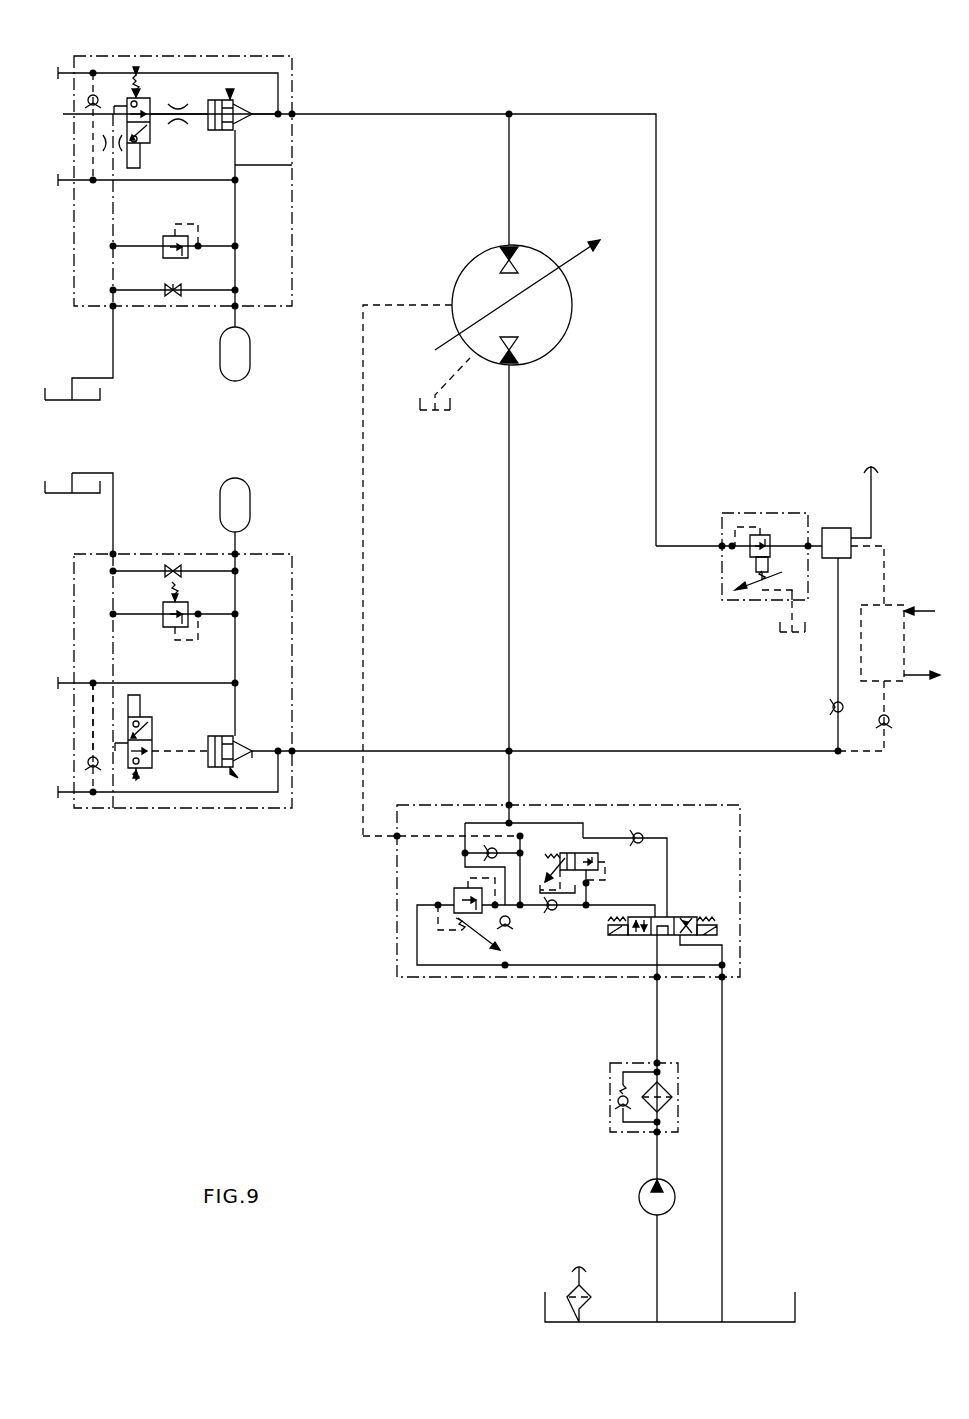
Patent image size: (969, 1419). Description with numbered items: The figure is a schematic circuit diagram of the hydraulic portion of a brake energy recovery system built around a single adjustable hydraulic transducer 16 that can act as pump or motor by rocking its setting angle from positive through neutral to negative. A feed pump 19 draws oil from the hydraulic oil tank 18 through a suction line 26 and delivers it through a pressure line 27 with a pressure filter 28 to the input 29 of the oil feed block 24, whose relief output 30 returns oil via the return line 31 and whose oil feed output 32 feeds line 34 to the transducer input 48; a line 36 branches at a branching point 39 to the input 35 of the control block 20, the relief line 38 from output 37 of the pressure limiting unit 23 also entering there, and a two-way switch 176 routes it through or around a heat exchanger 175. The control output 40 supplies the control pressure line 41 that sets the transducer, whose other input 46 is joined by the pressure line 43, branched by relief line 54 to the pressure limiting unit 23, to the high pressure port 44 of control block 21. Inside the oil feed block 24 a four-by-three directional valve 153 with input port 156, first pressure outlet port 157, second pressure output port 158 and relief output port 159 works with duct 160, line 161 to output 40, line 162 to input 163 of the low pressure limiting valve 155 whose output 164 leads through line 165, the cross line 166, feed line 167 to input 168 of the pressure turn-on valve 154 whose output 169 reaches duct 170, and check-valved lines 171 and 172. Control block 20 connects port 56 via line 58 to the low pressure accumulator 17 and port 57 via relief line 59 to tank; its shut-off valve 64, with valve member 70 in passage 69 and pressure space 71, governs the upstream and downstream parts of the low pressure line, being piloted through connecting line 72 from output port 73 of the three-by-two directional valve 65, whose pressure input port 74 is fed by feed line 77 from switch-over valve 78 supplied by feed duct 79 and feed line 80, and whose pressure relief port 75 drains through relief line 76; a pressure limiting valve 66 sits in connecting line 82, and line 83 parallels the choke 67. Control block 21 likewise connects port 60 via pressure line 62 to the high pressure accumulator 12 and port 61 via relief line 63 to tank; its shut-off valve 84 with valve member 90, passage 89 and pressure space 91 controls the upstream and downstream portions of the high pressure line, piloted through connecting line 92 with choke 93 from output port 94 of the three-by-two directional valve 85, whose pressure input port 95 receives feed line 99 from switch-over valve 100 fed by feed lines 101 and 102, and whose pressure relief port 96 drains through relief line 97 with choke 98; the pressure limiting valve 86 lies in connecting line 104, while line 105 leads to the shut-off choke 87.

The high pressure accumulator 12 is at (247, 358).
The hydraulic transducer 16 is at (453, 280).
The low pressure accumulator 17 is at (250, 496).
The hydraulic oil tank 18 is at (100, 401).
The feed pump 19 is at (638, 1198).
The control block 20 is at (160, 548).
The control block 21 is at (173, 310).
The pressure limiting unit 23 is at (718, 508).
The oil feed block 24 is at (392, 976).
The suction line 26 is at (655, 1240).
The pressure line 27 is at (655, 1156).
The pressure filter 28 is at (608, 1073).
The input 29 is at (660, 982).
The relief output 30 is at (726, 977).
The return line 31 is at (726, 1133).
The oil feed output 32 is at (512, 805).
The line 34 is at (512, 764).
The input 35 is at (296, 752).
The line 36 is at (413, 751).
The output 37 is at (808, 540).
The relief line 38 is at (806, 756).
The branching point 39 is at (508, 751).
The control output 40 is at (393, 837).
The control pressure line 41 is at (368, 500).
The pressure line 43 is at (390, 112).
The high pressure port 44 is at (296, 114).
The input 46 is at (516, 244).
The input 48 is at (515, 365).
The relief line 54 is at (660, 226).
The port 56 is at (240, 556).
The port 57 is at (112, 554).
The line 58 is at (240, 548).
The relief line 59 is at (112, 520).
The port 60 is at (240, 306).
The port 61 is at (112, 307).
The pressure line 62 is at (238, 316).
The relief line 63 is at (112, 350).
The shut-off valve 64 is at (238, 778).
The 3/2-way valve 65 is at (146, 778).
The pressure limiting valve 66 is at (166, 628).
The choke 67 is at (181, 588).
The passage 69 is at (245, 768).
The valve member 70 is at (242, 756).
The pressure space 71 is at (214, 770).
The connecting line 72 is at (252, 762).
The output port 73 is at (150, 744).
The pressure input port 74 is at (128, 752).
The pressure relief port 75 is at (131, 772).
The relief line 76 is at (112, 615).
The feed line 77 is at (116, 772).
The switch-over valve 78 is at (90, 755).
The feed duct 79 is at (92, 792).
The feed line 80 is at (92, 718).
The connecting line 82 is at (216, 616).
The line 83 is at (135, 571).
The shut-off valve 84 is at (232, 94).
The 3/2-way valve 85 is at (137, 66).
The pressure limiting valve 86 is at (168, 238).
The shut-off choke 87 is at (182, 287).
The passage 89 is at (246, 110).
The valve member 90 is at (248, 113).
The pressure space 91 is at (212, 100).
The connecting line 92 is at (210, 134).
The choke 93 is at (178, 102).
The output port 94 is at (148, 130).
The pressure input port 95 is at (127, 118).
The pressure relief port 96 is at (130, 105).
The relief line 97 is at (112, 228).
The choke 98 is at (108, 152).
The feed line 99 is at (115, 112).
The switch-over valve 100 is at (90, 112).
The feed line 101 is at (92, 80).
The feed line 102 is at (238, 182).
The connecting line 104 is at (208, 246).
The line 105 is at (140, 290).
The 4/3-way valve 153 is at (628, 936).
The pressure turn-on valve 154 is at (600, 855).
The low pressure limiting valve 155 is at (450, 892).
The input port 156 is at (650, 936).
The first pressure outlet port 157 is at (690, 915).
The second pressure output port 158 is at (702, 925).
The relief output port 159 is at (674, 936).
The duct 160 is at (725, 958).
The line 161 is at (655, 838).
The line 162 is at (660, 912).
The input 163 is at (492, 910).
The output 164 is at (436, 905).
The line 165 is at (415, 945).
The line 166 is at (525, 858).
The feed line 167 is at (583, 902).
The input 168 is at (586, 883).
The output 169 is at (506, 822).
The duct 170 is at (506, 824).
The line 171 is at (498, 922).
The line 172 is at (465, 852).
The heat exchanger 175 is at (900, 650).
The two-way switch 176 is at (838, 528).